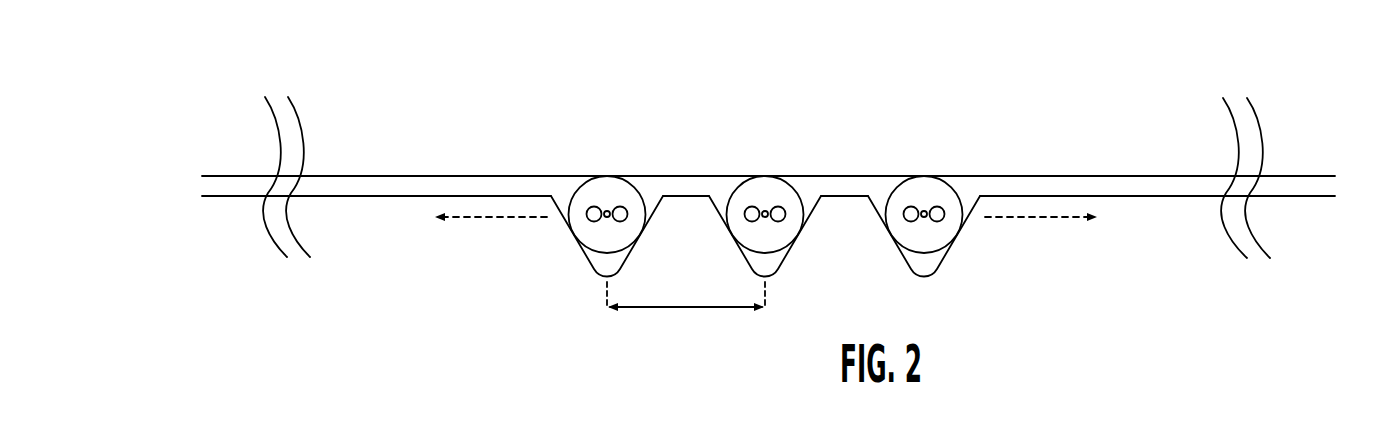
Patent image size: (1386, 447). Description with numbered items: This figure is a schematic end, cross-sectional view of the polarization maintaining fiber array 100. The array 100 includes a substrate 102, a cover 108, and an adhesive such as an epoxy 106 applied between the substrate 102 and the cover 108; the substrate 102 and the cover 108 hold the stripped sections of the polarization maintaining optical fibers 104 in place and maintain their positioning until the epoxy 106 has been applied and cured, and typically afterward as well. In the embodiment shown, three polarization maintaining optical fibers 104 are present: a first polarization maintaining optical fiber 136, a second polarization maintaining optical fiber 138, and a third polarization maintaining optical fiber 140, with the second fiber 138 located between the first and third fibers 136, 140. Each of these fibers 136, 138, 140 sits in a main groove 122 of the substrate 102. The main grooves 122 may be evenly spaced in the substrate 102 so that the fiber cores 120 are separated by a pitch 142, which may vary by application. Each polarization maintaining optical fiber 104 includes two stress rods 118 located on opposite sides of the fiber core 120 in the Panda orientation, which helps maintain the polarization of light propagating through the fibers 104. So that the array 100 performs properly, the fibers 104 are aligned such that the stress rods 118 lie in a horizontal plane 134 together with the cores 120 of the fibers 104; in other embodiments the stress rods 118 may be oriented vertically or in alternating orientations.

The polarization maintaining fiber array 100 is at (292, 38).
The substrate 102 is at (458, 283).
The polarization maintaining optical fiber 104 is at (636, 184).
The epoxy 106 is at (1128, 184).
The cover 108 is at (460, 115).
The stress rods 118 is at (589, 221).
The fiber core 120 is at (606, 220).
The main groove 122 is at (653, 208).
The horizontal plane 134 is at (461, 222).
The first polarization maintaining optical fiber 136 is at (573, 191).
The second polarization maintaining optical fiber 138 is at (735, 190).
The third polarization maintaining optical fiber 140 is at (893, 190).
The pitch 142 is at (680, 309).